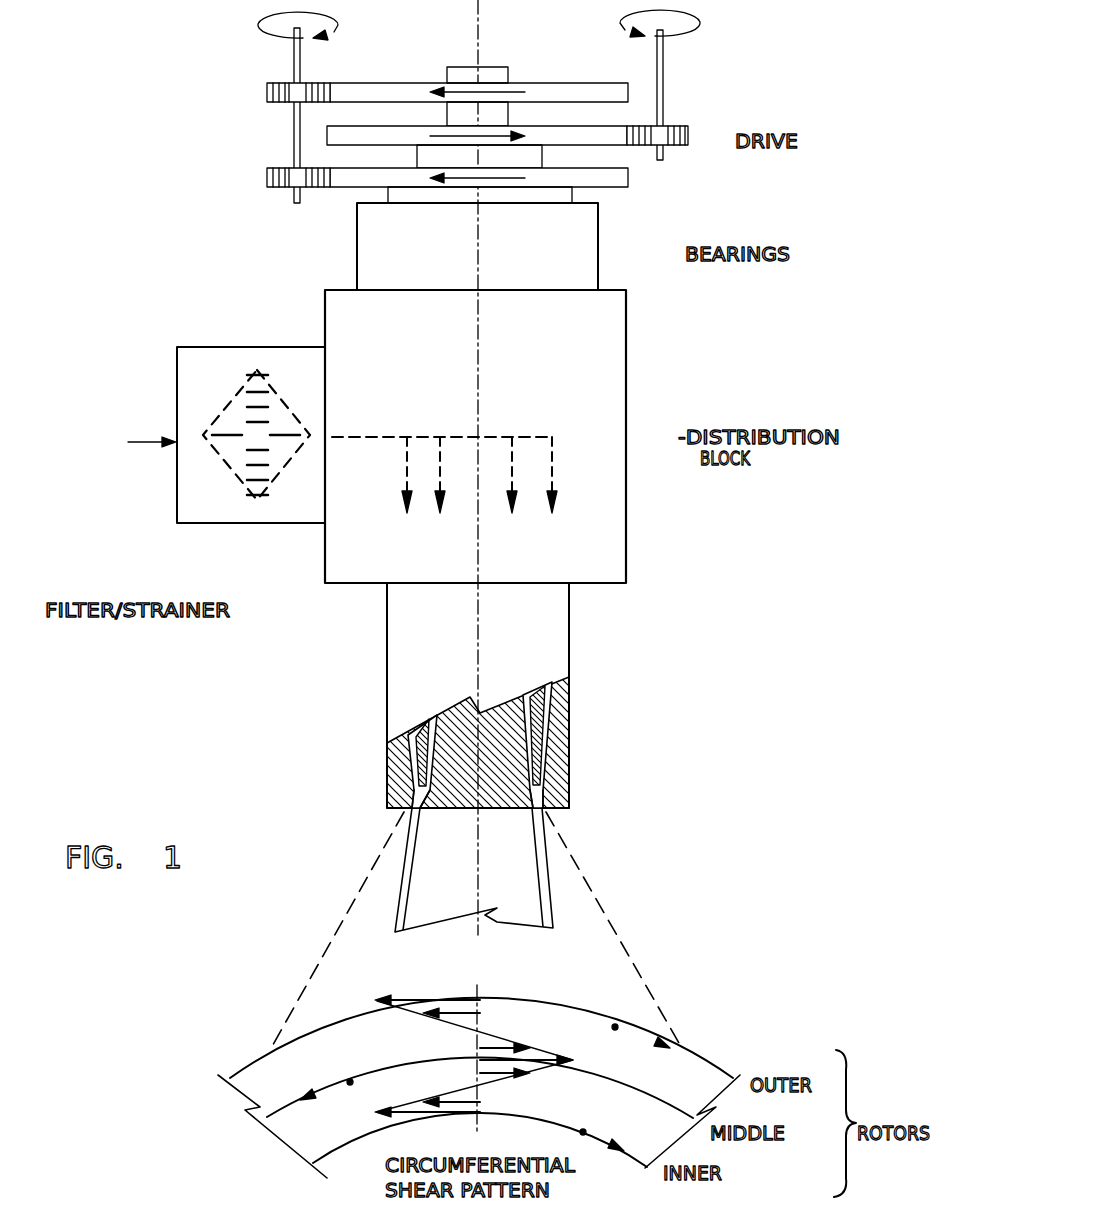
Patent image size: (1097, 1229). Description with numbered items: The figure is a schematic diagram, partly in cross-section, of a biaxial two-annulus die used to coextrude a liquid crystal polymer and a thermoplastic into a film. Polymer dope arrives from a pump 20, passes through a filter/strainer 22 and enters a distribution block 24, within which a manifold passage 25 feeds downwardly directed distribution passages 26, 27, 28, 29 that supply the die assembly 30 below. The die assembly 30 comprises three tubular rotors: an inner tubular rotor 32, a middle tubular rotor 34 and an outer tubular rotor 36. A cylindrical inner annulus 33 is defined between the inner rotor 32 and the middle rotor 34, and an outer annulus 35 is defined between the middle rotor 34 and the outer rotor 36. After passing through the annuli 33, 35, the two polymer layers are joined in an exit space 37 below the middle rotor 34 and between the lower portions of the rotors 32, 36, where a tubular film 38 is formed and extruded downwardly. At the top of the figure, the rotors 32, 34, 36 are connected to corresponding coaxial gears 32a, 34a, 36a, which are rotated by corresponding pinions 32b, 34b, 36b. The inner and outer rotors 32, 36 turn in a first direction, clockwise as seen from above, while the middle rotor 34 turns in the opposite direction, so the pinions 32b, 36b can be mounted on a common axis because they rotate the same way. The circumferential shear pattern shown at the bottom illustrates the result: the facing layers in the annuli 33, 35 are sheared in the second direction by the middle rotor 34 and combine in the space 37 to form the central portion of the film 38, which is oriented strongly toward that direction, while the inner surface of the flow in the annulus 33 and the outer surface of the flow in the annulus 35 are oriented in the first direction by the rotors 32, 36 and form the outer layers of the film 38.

The dope supply from pump 20 is at (110, 397).
The filter/strainer 22 is at (274, 527).
The distribution block 24 is at (626, 392).
The dope distribution manifold 25 is at (372, 432).
The first distribution channel 26 is at (402, 470).
The second distribution channel 27 is at (446, 478).
The third distribution channel 28 is at (510, 456).
The fourth distribution channel 29 is at (556, 478).
The die assembly 30 is at (421, 728).
The inner tubular rotor 32 is at (450, 810).
The coaxial gear 32a is at (386, 80).
The pinion 32b is at (268, 86).
The inner annulus 33 is at (568, 716).
The middle tubular rotor 34 is at (563, 770).
The coaxial gear 34a is at (350, 132).
The pinion 34b is at (690, 125).
The outer annulus 35 is at (563, 743).
The outer tubular rotor 36 is at (566, 810).
The coaxial gear 36a is at (347, 175).
The pinion 36b is at (268, 178).
The exit space 37 is at (563, 795).
The tubular film 38 is at (578, 881).